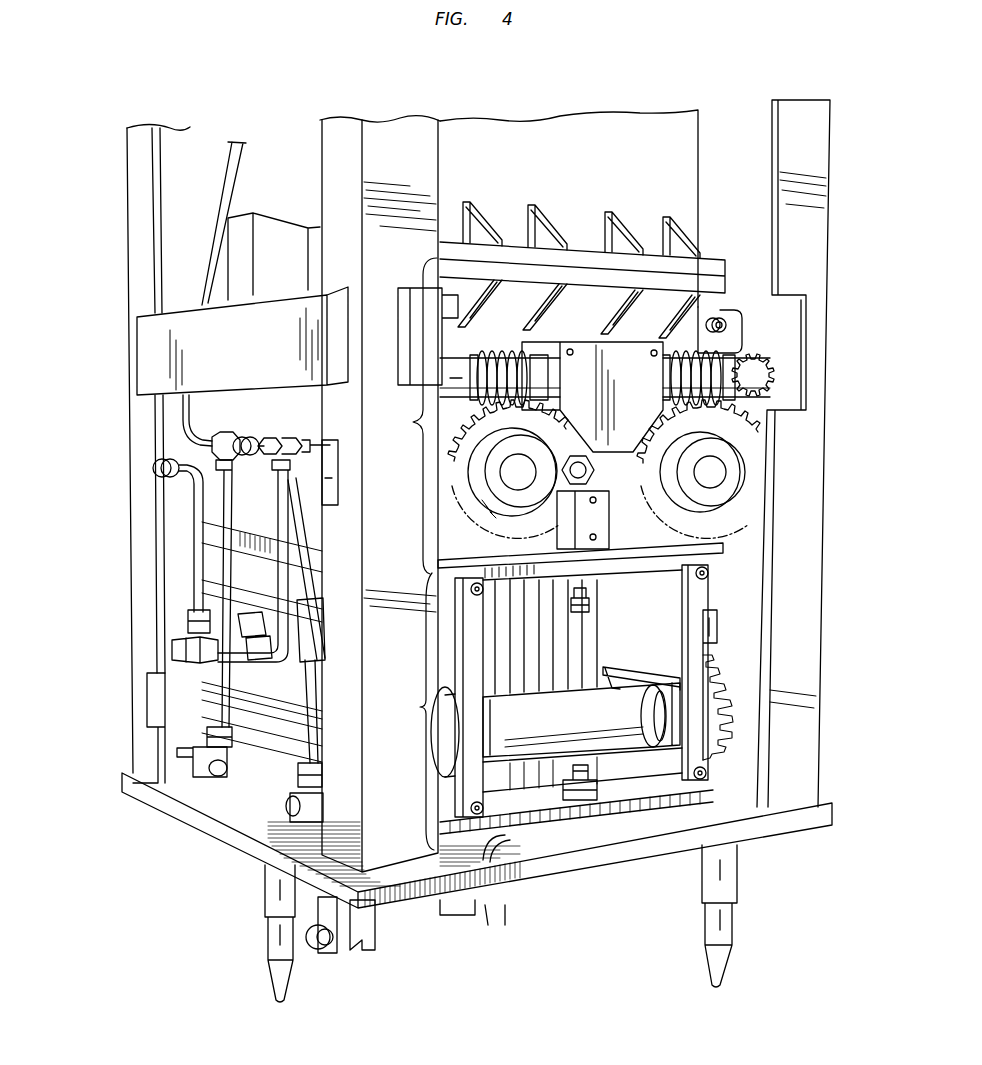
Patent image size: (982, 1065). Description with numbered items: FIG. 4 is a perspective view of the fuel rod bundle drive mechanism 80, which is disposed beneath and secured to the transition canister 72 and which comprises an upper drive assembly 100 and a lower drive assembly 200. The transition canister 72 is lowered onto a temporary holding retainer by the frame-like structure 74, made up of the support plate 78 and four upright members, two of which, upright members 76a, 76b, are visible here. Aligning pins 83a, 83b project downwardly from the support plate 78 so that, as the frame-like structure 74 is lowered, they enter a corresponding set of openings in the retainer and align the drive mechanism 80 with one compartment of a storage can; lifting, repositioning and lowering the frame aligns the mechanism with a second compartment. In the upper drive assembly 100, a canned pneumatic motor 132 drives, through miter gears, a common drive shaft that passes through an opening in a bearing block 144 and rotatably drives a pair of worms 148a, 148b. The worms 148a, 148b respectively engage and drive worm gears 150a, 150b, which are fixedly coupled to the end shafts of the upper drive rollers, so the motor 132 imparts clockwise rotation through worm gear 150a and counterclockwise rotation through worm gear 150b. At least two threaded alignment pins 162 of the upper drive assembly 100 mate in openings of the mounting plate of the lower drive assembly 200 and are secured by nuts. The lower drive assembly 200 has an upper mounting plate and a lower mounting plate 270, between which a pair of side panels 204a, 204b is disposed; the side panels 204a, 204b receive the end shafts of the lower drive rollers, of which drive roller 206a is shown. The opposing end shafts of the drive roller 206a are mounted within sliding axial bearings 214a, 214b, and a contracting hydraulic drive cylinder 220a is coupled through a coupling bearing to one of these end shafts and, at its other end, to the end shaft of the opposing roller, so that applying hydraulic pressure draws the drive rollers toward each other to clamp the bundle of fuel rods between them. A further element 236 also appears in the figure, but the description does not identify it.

The frame-like structure 74 is at (143, 127).
The upright member 76a is at (430, 158).
The upright member 76b is at (797, 118).
The transition canister 72 is at (698, 140).
The fuel rod bundle drive mechanism 80 is at (710, 265).
The canned pneumatic motor 132 is at (718, 307).
The worm 148a is at (497, 353).
The worm 148b is at (728, 345).
The bearing block 144 is at (587, 355).
The upper drive assembly 100 is at (420, 416).
The worm gear 150a is at (490, 520).
The worm gear 150b is at (727, 500).
The cross bar 236 is at (720, 548).
The threaded alignment pin 162 is at (585, 600).
The side panel 204a is at (470, 637).
The side panel 204b is at (697, 600).
The drive roller 206a is at (612, 670).
The sliding axial bearing 214a is at (487, 760).
The sliding axial bearing 214b is at (678, 672).
The lower drive assembly 200 is at (609, 730).
The drive cylinder 220a is at (280, 705).
The aligning pin 83a is at (738, 880).
The aligning pin 83b is at (268, 888).
The support plate 78 is at (780, 825).
The lower mounting plate 270 is at (497, 840).